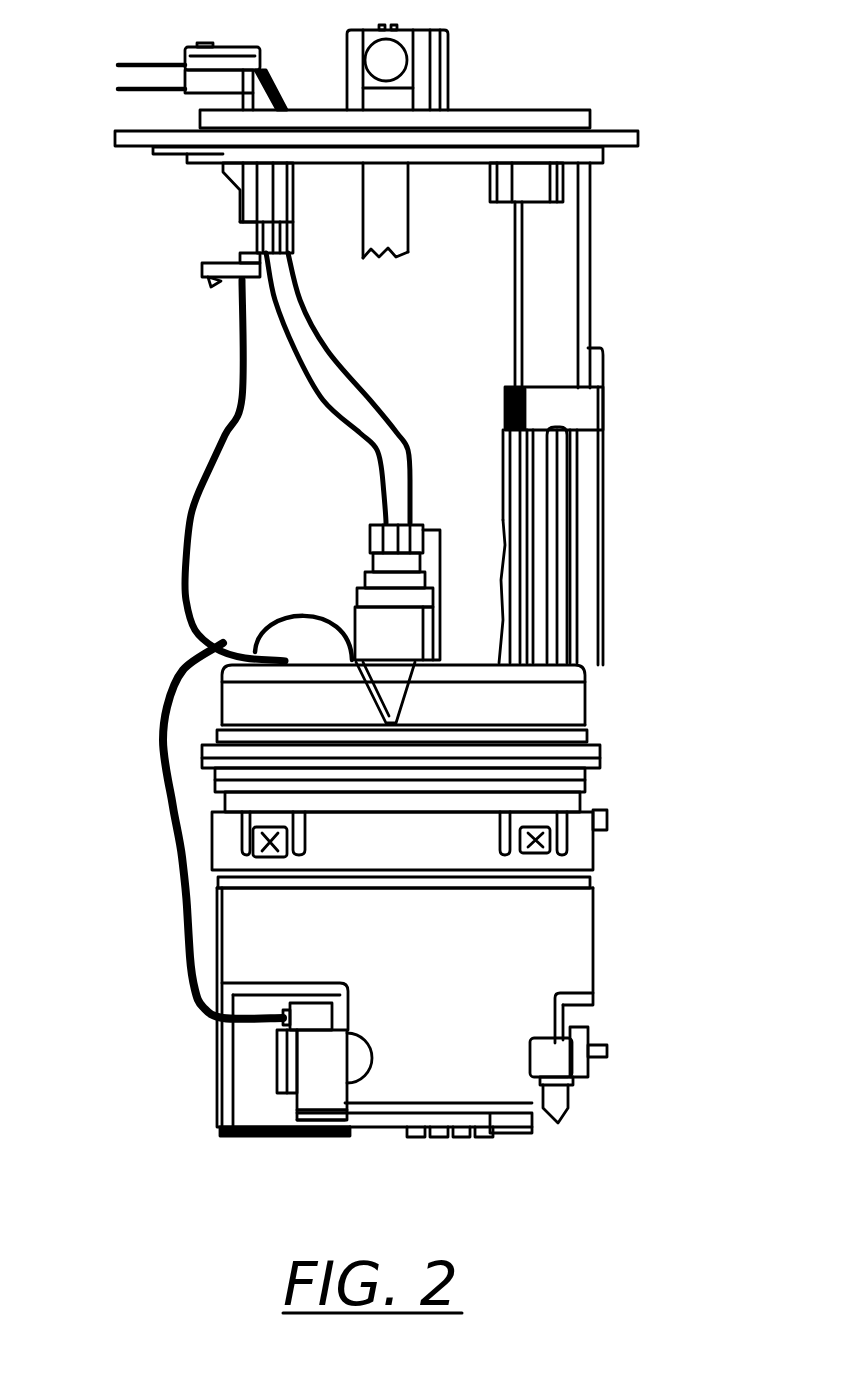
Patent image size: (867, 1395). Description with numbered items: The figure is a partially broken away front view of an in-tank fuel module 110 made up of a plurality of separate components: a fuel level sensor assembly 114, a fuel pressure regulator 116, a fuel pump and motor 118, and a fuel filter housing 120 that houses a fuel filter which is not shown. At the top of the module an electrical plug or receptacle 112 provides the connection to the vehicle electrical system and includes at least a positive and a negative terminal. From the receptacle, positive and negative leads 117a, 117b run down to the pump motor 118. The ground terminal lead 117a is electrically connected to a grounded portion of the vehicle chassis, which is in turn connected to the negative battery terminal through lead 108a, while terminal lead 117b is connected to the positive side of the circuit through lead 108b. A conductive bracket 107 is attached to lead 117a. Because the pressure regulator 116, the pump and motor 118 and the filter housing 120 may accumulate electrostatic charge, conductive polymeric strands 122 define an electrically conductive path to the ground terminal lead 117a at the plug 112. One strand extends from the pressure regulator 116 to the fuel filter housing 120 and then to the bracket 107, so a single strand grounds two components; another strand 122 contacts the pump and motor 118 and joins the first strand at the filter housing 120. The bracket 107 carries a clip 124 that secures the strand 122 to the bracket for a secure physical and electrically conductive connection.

The conductive bracket 107 is at (228, 265).
The lead 108a is at (152, 90).
The lead 108b is at (143, 63).
The fuel module 110 is at (622, 434).
The electrical plug or receptacle 112 is at (293, 182).
The fuel level sensor assembly 114 is at (590, 1032).
The fuel pressure regulator 116 is at (333, 1043).
The ground terminal lead 117a is at (377, 450).
The terminal lead 117b is at (372, 396).
The fuel pump and motor 118 is at (416, 654).
The fuel filter housing 120 is at (588, 684).
The conductive polymeric strands 122 is at (185, 522).
The clip 124 is at (211, 283).